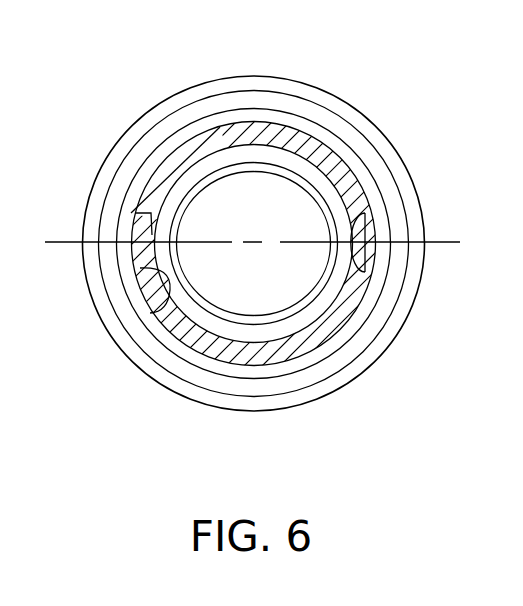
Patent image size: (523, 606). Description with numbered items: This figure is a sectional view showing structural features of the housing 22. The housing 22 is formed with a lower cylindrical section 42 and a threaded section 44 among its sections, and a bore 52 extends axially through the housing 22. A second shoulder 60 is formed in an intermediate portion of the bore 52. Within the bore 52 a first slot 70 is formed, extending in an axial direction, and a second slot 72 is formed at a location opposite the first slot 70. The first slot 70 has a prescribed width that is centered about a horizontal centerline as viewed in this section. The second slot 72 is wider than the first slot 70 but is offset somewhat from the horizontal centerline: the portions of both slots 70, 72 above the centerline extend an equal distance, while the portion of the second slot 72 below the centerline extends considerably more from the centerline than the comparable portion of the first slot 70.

The housing 22 is at (412, 156).
The lower cylindrical section 42 is at (286, 366).
The threaded section 44 is at (352, 340).
The bore 52 is at (299, 197).
The second shoulder 60 is at (200, 170).
The first slot 70 is at (362, 221).
The second slot 72 is at (162, 312).